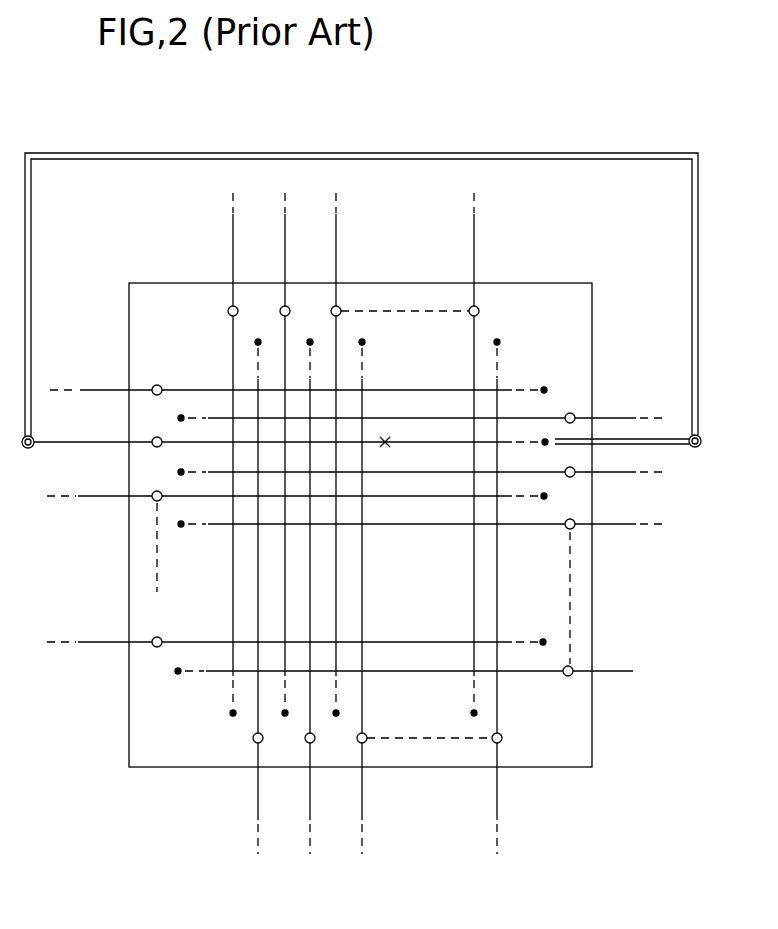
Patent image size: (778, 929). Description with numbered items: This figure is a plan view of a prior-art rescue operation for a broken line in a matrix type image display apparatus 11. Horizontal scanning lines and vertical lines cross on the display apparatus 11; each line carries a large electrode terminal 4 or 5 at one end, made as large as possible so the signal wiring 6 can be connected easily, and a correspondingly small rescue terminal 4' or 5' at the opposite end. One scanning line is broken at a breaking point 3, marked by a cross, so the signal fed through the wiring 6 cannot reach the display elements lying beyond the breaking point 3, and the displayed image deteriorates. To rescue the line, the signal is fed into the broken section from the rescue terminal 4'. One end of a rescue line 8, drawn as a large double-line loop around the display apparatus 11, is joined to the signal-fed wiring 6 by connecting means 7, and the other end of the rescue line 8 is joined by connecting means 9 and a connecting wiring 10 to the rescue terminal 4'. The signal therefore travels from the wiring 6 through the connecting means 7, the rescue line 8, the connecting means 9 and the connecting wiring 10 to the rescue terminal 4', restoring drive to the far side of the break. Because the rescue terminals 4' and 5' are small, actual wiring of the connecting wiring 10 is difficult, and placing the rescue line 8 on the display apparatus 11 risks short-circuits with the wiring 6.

The breaking point 3 is at (386, 436).
The electrode terminal 4 is at (293, 495).
The rescue terminal 4' is at (581, 495).
The electrode terminal 5 is at (331, 449).
The rescue terminal 5' is at (329, 729).
The wiring 6 is at (93, 444).
The connecting means 7 is at (26, 448).
The rescue line 8 is at (386, 156).
The connecting means 9 is at (697, 448).
The connecting wiring 10 is at (618, 437).
The image display apparatus 11 is at (157, 755).